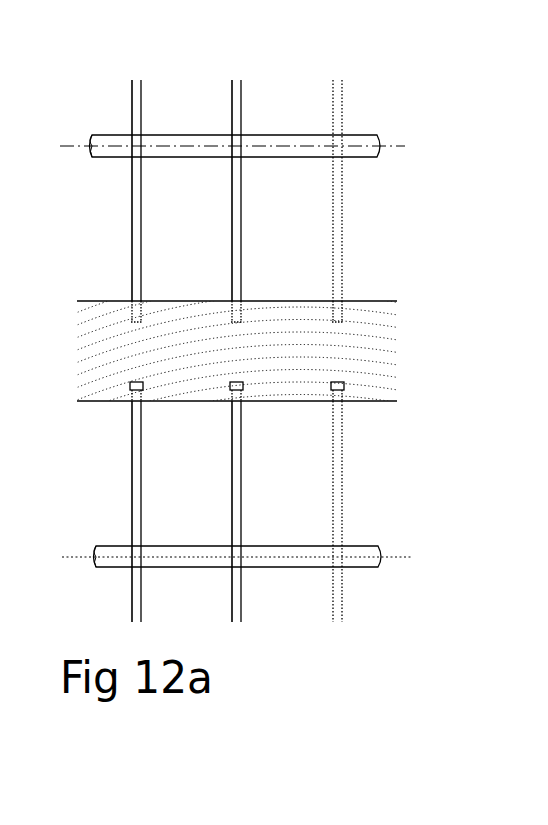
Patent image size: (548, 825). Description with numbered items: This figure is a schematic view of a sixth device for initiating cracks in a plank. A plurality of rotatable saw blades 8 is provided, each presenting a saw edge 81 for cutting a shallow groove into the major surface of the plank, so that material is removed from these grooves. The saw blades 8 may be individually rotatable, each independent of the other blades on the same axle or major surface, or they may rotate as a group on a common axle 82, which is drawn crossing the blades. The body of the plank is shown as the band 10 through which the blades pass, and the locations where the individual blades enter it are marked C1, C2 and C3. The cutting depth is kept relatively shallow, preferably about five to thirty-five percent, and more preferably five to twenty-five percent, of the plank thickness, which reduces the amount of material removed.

The rotatable saw blade 8 is at (377, 351).
The saw edge 81 is at (343, 391).
The common axle 82 is at (272, 135).
The body 10 is at (111, 323).
The first contact region C1 is at (340, 323).
The second contact region C2 is at (237, 323).
The third contact region C3 is at (143, 320).